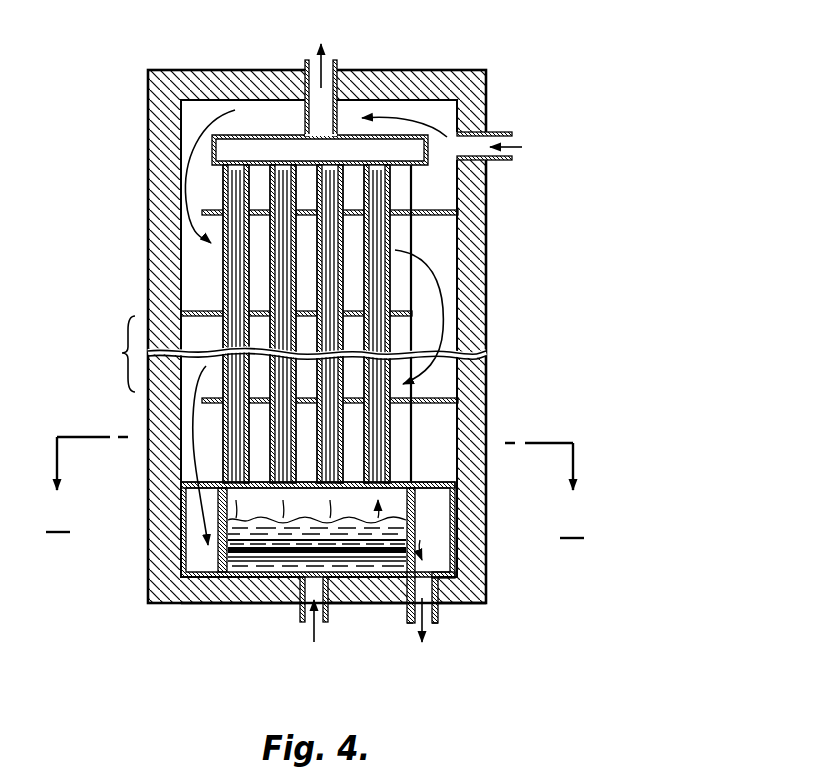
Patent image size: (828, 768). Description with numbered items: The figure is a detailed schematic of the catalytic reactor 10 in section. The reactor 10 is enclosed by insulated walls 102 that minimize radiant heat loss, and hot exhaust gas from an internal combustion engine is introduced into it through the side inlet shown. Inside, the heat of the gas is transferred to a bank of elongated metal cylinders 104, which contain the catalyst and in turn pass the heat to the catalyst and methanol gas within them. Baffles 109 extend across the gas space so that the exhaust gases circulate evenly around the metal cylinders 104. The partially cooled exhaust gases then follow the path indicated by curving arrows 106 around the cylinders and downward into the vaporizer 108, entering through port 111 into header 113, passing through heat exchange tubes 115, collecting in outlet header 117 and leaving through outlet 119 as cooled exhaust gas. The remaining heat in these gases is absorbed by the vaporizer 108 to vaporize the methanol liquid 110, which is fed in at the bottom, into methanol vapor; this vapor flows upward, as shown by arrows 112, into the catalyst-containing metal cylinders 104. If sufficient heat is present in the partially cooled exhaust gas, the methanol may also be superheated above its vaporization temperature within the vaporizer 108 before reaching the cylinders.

The catalytic reactor 10 is at (118, 90).
The insulated walls 102 is at (480, 320).
The elongated metal cylinders 104 is at (272, 268).
The curving arrows 106 is at (188, 172).
The vaporizer 108 is at (492, 546).
The baffles 109 is at (200, 312).
The methanol liquid 110 is at (472, 586).
The port 111 is at (202, 482).
The arrows 112 is at (235, 520).
The header 113 is at (195, 507).
The heat exchange tubes 115 is at (273, 566).
The outlet header 117 is at (414, 555).
The outlet 119 is at (428, 625).